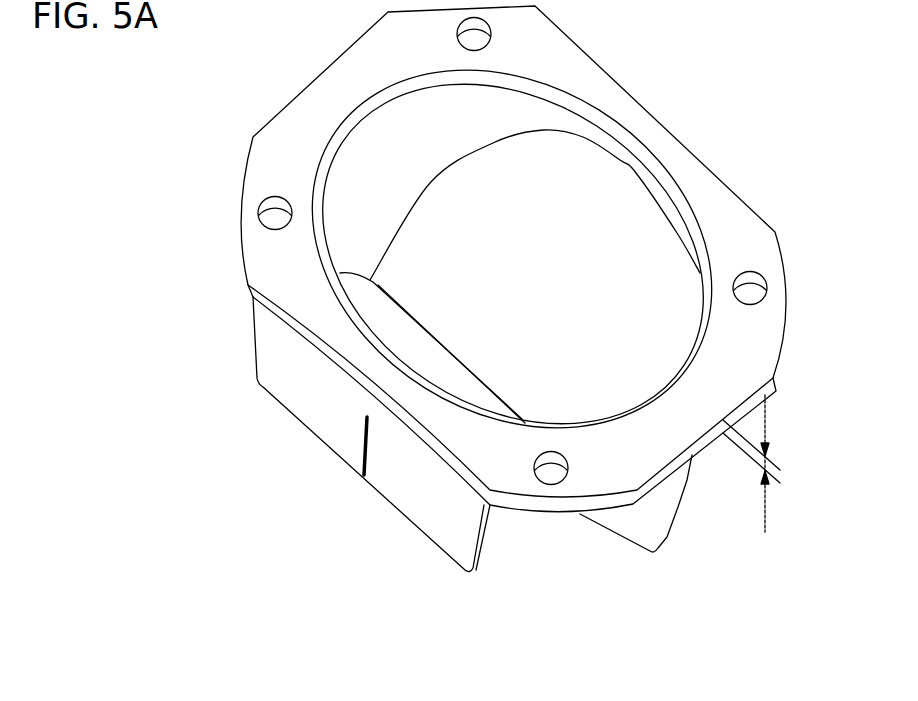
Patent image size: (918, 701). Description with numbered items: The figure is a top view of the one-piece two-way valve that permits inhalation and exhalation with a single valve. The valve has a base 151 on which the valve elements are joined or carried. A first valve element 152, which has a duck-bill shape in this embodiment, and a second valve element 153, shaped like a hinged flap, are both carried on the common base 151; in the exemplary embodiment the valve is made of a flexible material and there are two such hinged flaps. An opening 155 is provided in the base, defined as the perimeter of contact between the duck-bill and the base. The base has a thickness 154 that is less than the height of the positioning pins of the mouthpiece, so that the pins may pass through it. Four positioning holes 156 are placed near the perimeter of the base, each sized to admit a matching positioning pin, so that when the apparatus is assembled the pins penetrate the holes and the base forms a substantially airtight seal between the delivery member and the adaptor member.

The base 151 is at (723, 213).
The first valve element 152 is at (667, 518).
The second valve element 153 is at (483, 533).
The thickness 154 is at (753, 475).
The opening 155 is at (552, 275).
The positioning holes 156 is at (477, 40).